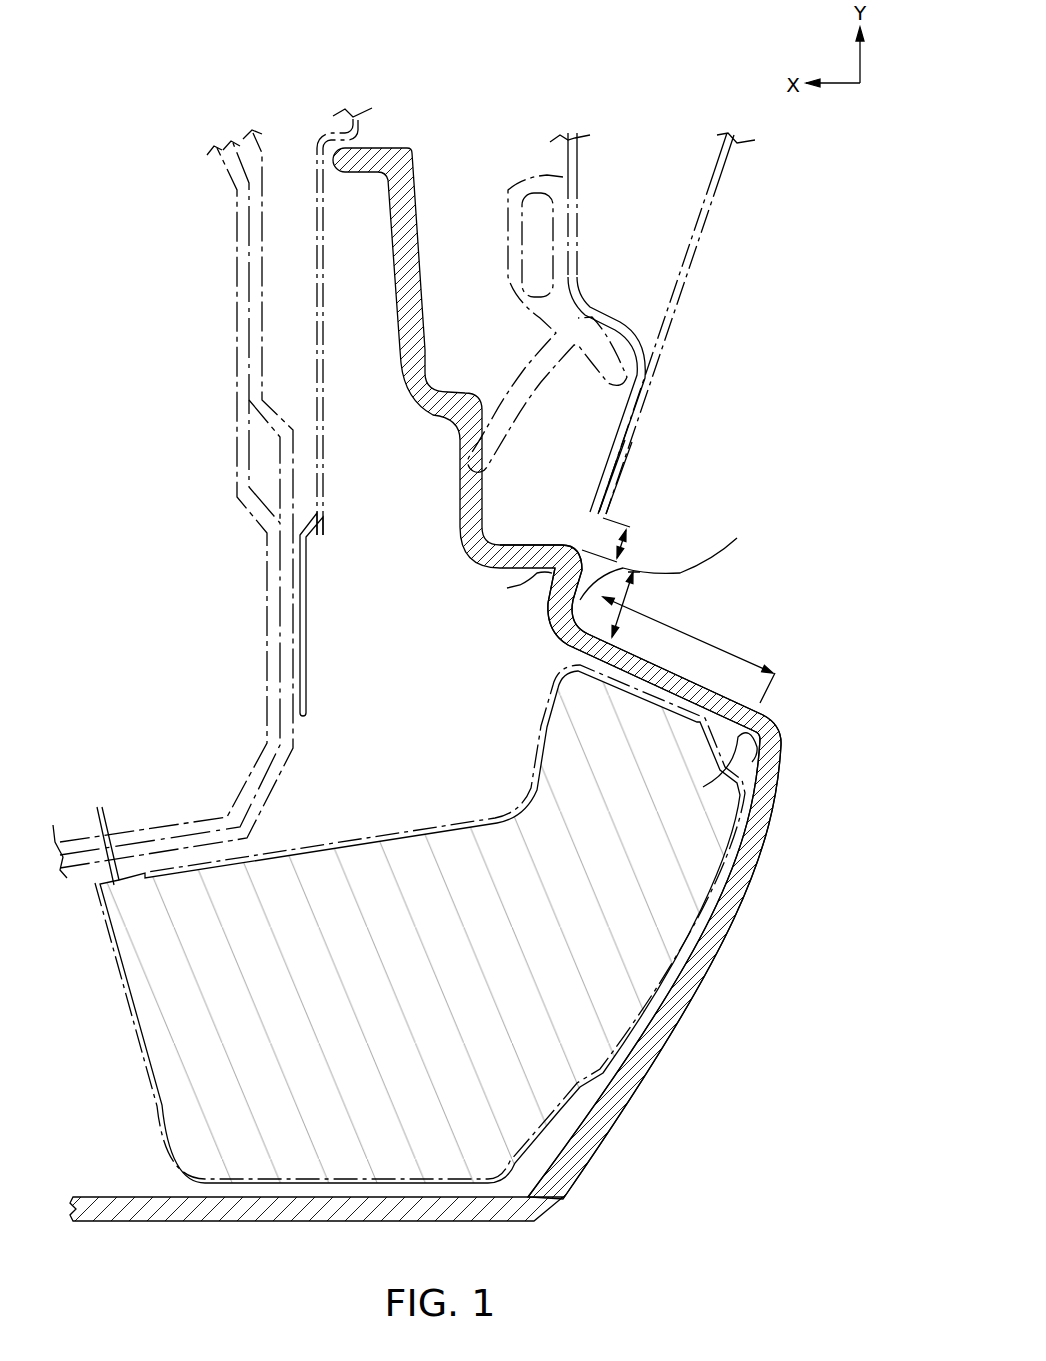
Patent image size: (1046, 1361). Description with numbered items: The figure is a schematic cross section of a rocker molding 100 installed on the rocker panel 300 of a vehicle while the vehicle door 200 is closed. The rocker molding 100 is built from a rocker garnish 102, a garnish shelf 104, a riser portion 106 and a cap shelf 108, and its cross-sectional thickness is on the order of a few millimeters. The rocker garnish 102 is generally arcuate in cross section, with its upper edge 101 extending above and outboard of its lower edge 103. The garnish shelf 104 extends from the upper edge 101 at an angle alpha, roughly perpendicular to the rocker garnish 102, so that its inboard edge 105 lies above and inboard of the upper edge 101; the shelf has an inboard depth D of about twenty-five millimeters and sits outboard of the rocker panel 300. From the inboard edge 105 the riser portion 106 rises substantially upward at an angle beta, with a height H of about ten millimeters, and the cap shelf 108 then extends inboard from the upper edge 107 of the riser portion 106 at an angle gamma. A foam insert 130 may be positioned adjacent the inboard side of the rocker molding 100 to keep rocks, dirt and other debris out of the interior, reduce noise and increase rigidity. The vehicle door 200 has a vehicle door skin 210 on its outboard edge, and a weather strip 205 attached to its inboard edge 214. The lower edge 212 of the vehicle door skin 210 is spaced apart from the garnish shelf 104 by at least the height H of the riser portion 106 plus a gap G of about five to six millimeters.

The rocker molding 100 is at (598, 1179).
The upper edge of the rocker garnish 101 is at (777, 770).
The rocker garnish 102 is at (701, 972).
The lower edge of the rocker garnish 103 is at (552, 1195).
The garnish shelf 104 is at (658, 683).
The inboard edge of the garnish shelf 105 is at (568, 643).
The riser portion 106 is at (557, 598).
The upper edge of the riser portion 107 is at (567, 560).
The cap shelf 108 is at (532, 550).
The foam insert 130 is at (153, 957).
The vehicle door 200 is at (650, 183).
The weather strip 205 is at (515, 373).
The vehicle door skin 210 is at (662, 348).
The lower edge of the vehicle door skin 212 is at (626, 453).
The inboard edge of the vehicle door 214 is at (577, 223).
The rocker panel 300 is at (323, 237).